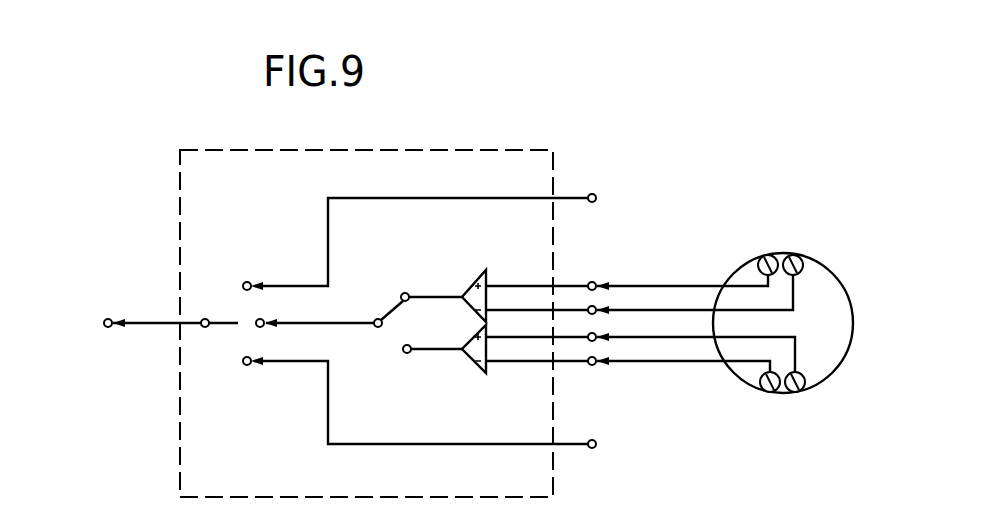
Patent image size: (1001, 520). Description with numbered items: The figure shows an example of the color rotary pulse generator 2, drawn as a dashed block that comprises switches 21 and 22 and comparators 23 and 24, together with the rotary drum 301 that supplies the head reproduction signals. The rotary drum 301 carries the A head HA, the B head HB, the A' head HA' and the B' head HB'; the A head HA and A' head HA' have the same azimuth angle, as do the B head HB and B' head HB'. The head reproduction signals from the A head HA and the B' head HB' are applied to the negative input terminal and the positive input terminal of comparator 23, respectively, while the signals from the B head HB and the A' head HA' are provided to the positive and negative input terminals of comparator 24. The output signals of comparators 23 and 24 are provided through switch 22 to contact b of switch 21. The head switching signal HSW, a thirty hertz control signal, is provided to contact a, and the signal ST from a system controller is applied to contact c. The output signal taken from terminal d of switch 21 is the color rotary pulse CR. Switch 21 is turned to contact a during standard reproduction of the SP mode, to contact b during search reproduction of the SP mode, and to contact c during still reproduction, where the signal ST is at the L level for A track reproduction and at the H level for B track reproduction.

The color rotary pulse generator 2 is at (213, 148).
The switch 21 is at (289, 309).
The switch 22 is at (383, 295).
The comparator 23 is at (466, 288).
The comparator 24 is at (466, 362).
The rotary drum 301 is at (720, 339).
The contact a is at (250, 281).
The contact b is at (269, 320).
The contact c is at (249, 366).
The terminal d is at (206, 328).
The color rotary pulse CR is at (144, 323).
The head switching signal HSW is at (460, 237).
The signal from system controller ST is at (442, 409).
The A head HA is at (816, 246).
The B head HB is at (806, 416).
The A' head HA' is at (753, 416).
The B' head HB' is at (761, 246).